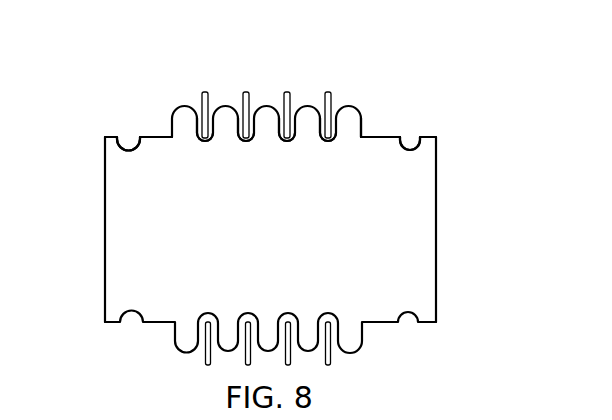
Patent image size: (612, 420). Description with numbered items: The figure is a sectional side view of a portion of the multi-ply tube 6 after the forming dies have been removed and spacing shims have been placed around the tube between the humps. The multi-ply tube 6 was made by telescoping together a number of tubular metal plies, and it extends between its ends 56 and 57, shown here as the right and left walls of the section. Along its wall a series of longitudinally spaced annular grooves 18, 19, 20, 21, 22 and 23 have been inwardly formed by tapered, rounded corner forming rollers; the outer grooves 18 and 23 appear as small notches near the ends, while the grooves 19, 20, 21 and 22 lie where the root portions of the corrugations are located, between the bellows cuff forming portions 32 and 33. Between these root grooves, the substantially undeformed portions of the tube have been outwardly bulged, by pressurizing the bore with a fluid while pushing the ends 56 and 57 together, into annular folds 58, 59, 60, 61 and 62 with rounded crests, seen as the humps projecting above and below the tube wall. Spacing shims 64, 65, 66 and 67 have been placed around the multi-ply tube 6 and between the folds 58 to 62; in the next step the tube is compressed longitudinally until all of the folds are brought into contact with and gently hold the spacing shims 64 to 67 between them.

The multi-ply tube 6 is at (250, 270).
The annular groove 18 is at (410, 151).
The annular groove 19 is at (328, 142).
The annular groove 20 is at (287, 142).
The annular groove 21 is at (246, 142).
The annular groove 22 is at (205, 142).
The annular groove 23 is at (128, 151).
The bellows cuff forming portion 32 is at (383, 138).
The bellows cuff forming portion 33 is at (157, 138).
The end of the multi-ply tube 56 is at (437, 197).
The end of the multi-ply tube 57 is at (105, 217).
The annular fold 58 is at (359, 116).
The annular fold 59 is at (322, 98).
The annular fold 60 is at (278, 96).
The annular fold 61 is at (235, 95).
The annular fold 62 is at (196, 98).
The spacing shim 64 is at (340, 94).
The spacing shim 65 is at (300, 94).
The spacing shim 66 is at (257, 93).
The spacing shim 67 is at (208, 90).